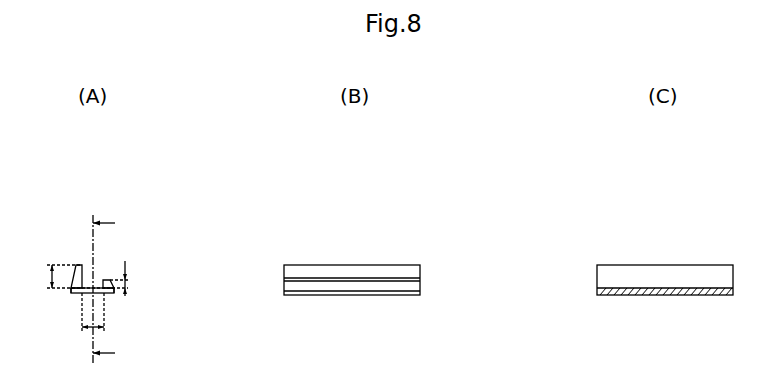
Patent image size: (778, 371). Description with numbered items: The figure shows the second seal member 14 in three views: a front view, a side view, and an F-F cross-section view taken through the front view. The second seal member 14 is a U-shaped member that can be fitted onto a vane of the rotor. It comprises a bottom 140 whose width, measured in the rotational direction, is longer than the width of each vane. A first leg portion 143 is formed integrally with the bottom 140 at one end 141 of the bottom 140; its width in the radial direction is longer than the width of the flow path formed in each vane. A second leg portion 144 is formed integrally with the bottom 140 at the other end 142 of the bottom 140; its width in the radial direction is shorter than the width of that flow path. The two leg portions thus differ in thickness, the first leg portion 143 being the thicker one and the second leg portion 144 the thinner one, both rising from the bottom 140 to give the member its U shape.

The second seal member 14 is at (180, 151).
The bottom 140 is at (78, 293).
The one end 141 is at (70, 294).
The other end 142 is at (115, 295).
The first leg portion 143 is at (80, 264).
The second leg portion 144 is at (106, 280).